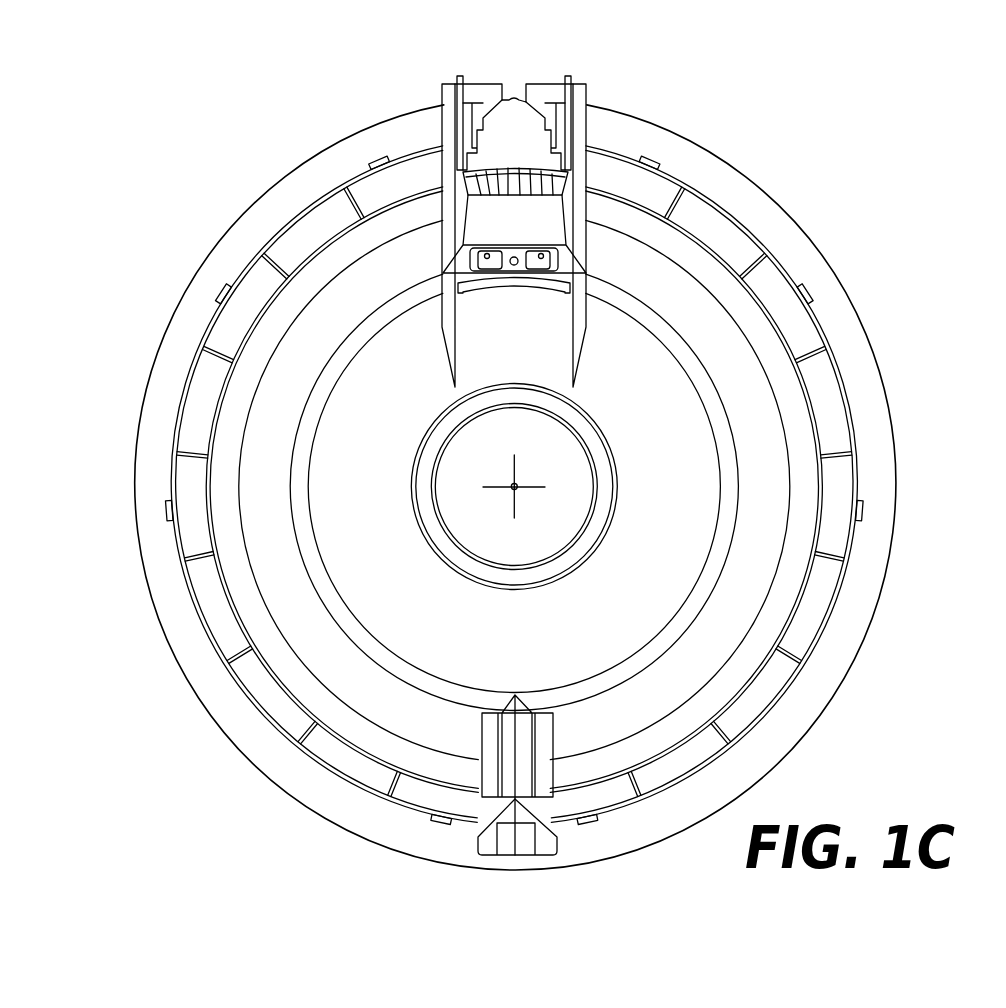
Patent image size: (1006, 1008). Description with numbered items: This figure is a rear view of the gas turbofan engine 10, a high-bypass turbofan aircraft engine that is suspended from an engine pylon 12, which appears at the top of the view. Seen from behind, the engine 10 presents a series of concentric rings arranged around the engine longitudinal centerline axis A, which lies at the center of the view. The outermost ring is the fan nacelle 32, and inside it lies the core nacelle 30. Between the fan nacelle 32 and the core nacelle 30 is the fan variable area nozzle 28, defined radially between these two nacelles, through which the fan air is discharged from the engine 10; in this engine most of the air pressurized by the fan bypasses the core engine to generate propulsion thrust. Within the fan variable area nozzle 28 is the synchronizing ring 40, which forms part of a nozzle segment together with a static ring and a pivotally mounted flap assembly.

The gas turbofan engine 10 is at (752, 106).
The engine pylon 12 is at (537, 93).
The fan variable area nozzle 28 is at (827, 397).
The core nacelle 30 is at (567, 467).
The fan nacelle 32 is at (788, 236).
The synchronizing ring 40 is at (777, 450).
The engine longitudinal centerline axis A is at (515, 504).